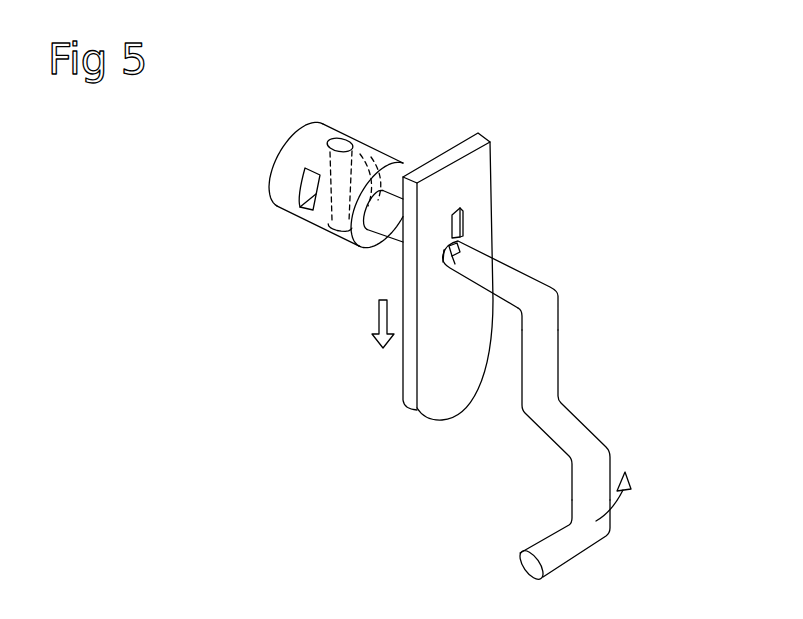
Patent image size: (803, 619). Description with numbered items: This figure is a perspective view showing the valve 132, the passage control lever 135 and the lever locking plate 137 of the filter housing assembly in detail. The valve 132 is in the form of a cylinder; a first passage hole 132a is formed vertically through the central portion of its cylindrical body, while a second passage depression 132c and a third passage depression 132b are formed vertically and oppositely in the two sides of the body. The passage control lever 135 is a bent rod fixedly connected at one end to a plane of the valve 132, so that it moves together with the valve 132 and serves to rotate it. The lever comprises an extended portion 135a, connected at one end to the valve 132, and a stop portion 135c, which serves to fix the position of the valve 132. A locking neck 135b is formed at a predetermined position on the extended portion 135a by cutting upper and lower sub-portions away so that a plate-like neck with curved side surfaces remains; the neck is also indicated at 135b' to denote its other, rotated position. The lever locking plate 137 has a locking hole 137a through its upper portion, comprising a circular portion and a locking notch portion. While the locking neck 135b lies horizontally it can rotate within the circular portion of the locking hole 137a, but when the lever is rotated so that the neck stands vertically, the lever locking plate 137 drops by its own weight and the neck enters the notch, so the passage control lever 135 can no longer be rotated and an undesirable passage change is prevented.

The valve 132 is at (303, 108).
The first passage hole 132a is at (343, 137).
The third passage depression 132b is at (300, 182).
The hidden groove 132c is at (372, 160).
The passage control lever 135 is at (577, 338).
The extended portion 135a is at (503, 272).
The locking neck 135b is at (532, 226).
The lever arm hook end (engaged position) 135b' is at (356, 284).
The stop portion 135c is at (597, 540).
The lever locking plate 137 is at (400, 385).
The locking hole 137a is at (463, 209).